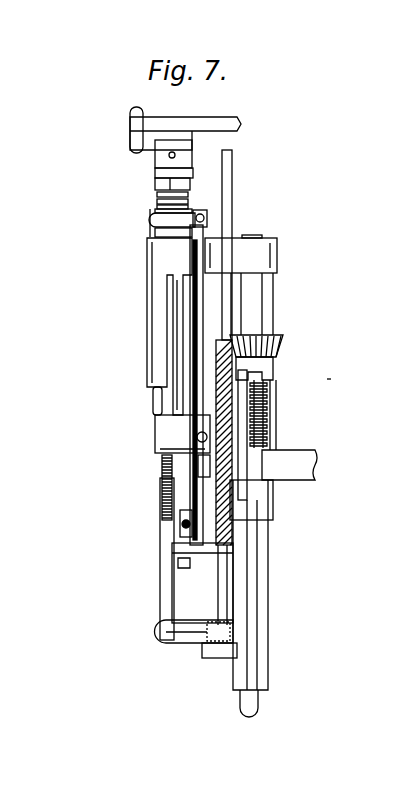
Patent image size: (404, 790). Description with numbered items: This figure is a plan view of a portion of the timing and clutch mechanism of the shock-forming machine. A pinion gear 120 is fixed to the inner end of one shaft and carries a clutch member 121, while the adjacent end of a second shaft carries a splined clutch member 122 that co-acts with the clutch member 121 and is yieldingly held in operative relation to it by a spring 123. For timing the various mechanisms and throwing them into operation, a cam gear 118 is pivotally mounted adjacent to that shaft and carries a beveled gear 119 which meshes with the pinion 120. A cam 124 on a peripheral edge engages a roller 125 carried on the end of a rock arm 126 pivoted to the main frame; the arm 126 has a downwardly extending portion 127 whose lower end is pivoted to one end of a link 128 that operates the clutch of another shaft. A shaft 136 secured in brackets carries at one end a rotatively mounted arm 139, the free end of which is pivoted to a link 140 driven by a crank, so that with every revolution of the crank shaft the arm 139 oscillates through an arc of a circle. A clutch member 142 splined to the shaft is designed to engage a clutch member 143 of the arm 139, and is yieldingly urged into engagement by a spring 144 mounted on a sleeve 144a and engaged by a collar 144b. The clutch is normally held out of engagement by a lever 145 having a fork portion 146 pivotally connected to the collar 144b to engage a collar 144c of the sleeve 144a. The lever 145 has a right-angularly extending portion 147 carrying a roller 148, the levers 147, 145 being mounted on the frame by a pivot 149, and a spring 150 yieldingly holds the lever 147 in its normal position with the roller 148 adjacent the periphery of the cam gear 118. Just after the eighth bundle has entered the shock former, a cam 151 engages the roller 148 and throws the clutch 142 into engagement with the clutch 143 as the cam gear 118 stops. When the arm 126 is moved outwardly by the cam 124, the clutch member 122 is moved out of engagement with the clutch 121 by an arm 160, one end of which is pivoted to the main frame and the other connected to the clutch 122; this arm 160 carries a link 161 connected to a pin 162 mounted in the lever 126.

The cam gear 118 is at (202, 472).
The beveled gear 119 is at (257, 497).
The pinion gear 120 is at (277, 350).
The clutch member 121 is at (268, 372).
The splined clutch member 122 is at (245, 388).
The spring 123 is at (265, 420).
The cam 124 is at (182, 568).
The roller 125 is at (181, 525).
The rock arm 126 is at (172, 585).
The downwardly extending portion 127 is at (205, 645).
The link 128 is at (233, 213).
The shaft 136 is at (162, 403).
The rotatively mounted arm 139 is at (177, 148).
The link 140 is at (178, 121).
The clutch member 142 is at (160, 185).
The clutch member 143 is at (193, 172).
The spring 144 is at (190, 199).
The sleeve 144a is at (155, 211).
The collar 144b is at (150, 220).
The collar 144c is at (157, 234).
The lever 145 is at (207, 213).
The fork portion 146 is at (150, 216).
The right angularly extending portion 147 is at (205, 258).
The roller 148 is at (198, 437).
The pivot 149 is at (250, 236).
The spring 150 is at (207, 333).
The cam 151 is at (200, 468).
The arm 160 is at (342, 377).
The link 161 is at (232, 467).
The pin 162 is at (237, 550).